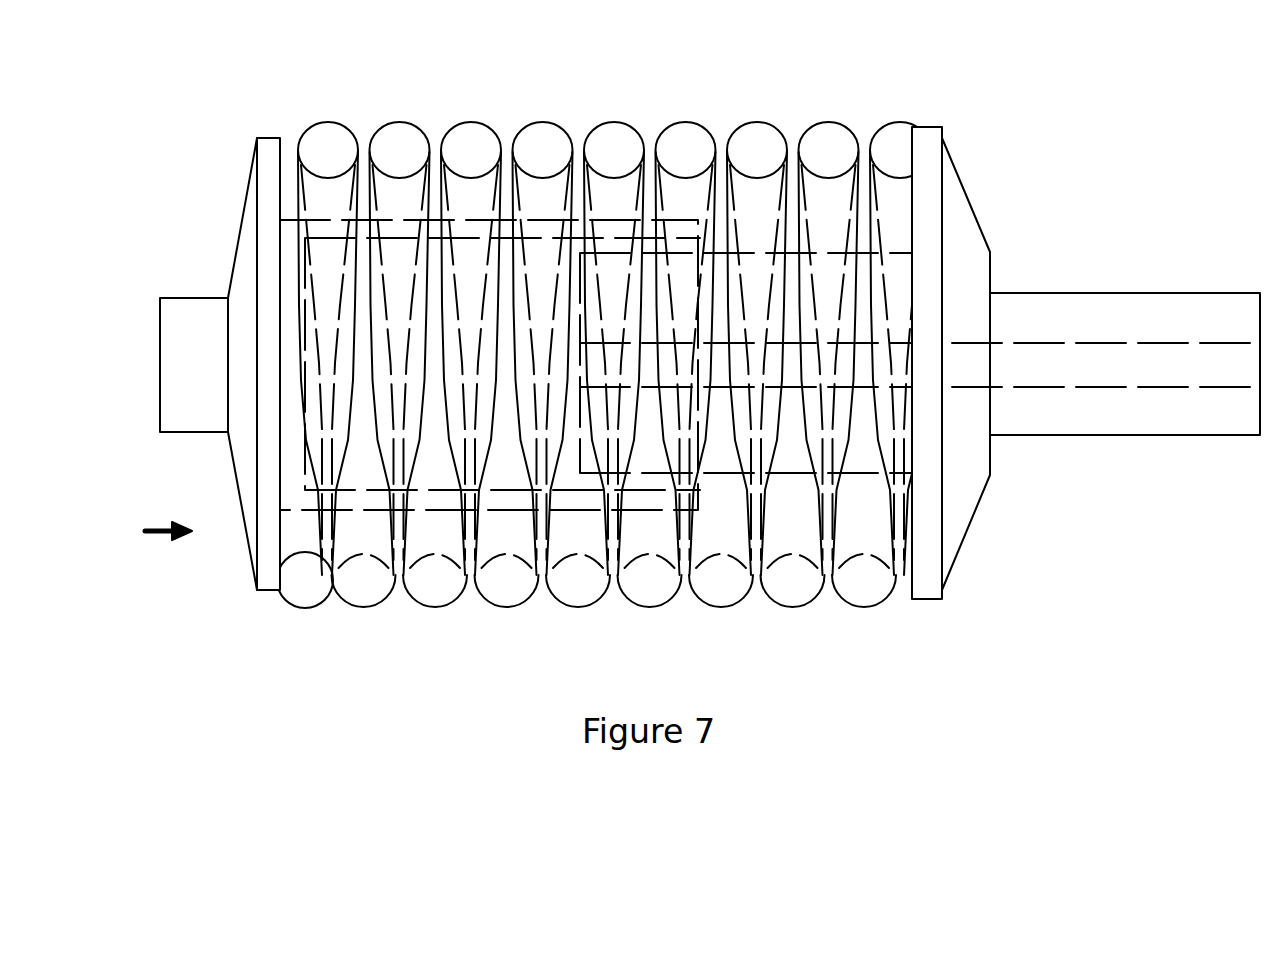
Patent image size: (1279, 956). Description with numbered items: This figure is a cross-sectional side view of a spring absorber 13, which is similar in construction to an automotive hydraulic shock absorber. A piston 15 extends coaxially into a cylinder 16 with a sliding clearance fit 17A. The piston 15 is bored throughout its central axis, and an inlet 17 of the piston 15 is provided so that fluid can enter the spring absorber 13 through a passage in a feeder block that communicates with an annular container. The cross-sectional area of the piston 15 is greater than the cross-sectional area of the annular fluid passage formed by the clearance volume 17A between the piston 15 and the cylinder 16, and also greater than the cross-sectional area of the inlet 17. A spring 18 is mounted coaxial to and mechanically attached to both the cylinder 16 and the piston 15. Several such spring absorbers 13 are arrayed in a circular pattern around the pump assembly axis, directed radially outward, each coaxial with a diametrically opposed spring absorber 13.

The spring absorber 13 is at (147, 532).
The piston 15 is at (965, 190).
The cylinder 16 is at (243, 208).
The inlet 17 is at (1073, 392).
The sliding clearance fit 17A is at (615, 250).
The spring 18 is at (696, 122).